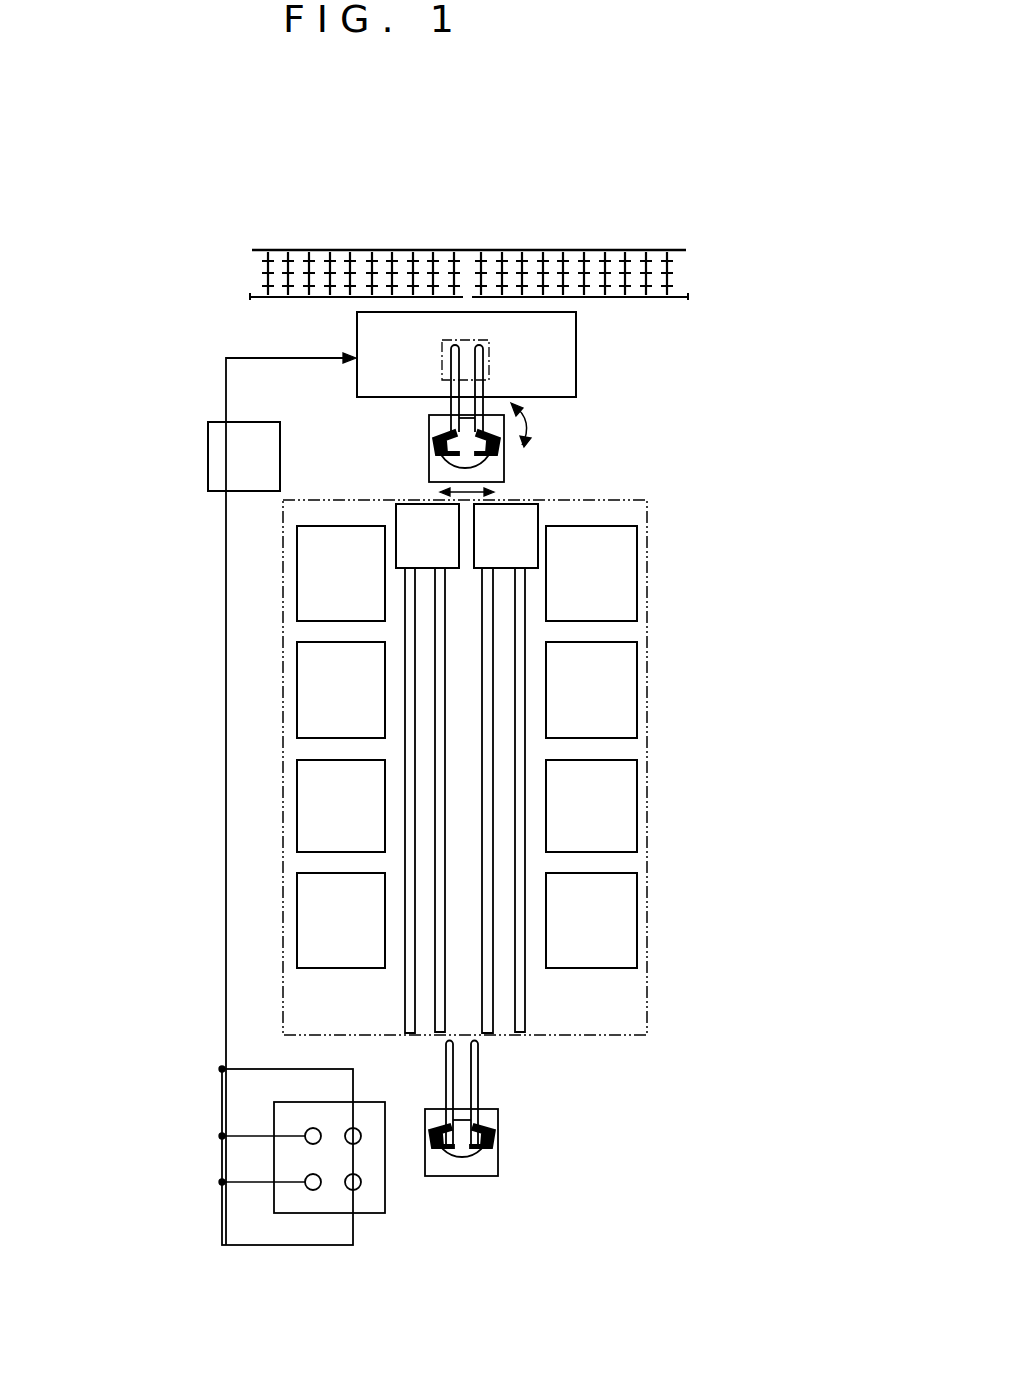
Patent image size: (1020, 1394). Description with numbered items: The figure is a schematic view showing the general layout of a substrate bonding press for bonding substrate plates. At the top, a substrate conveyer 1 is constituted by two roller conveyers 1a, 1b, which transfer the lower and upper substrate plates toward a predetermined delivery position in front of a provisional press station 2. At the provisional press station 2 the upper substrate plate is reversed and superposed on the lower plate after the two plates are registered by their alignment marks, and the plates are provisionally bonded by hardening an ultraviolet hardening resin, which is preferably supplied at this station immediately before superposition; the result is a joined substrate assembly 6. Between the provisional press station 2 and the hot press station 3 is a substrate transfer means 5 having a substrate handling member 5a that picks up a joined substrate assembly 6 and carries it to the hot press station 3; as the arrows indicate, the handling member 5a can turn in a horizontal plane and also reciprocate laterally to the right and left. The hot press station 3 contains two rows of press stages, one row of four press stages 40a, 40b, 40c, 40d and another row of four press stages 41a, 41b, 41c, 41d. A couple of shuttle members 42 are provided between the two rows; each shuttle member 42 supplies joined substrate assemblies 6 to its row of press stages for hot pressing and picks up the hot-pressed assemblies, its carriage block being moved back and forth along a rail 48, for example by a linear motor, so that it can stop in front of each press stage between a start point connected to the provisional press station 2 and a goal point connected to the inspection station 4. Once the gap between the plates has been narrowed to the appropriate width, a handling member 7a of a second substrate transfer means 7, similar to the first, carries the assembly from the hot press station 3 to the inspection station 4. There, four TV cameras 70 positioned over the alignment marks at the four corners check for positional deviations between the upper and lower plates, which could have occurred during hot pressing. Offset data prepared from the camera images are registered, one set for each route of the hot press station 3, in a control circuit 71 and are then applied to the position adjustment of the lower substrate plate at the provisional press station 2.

The substrate conveyer 1 is at (462, 228).
The roller conveyer 1a is at (280, 249).
The roller conveyer 1b is at (638, 249).
The provisional press station 2 is at (577, 358).
The hot press station 3 is at (648, 752).
The inspection station 4 is at (272, 1203).
The substrate transfer means 5 is at (505, 452).
The substrate handling member 5a is at (445, 434).
The joined substrate assembly 6 is at (442, 346).
The substrate transfer means 7 is at (498, 1163).
The handling member 7a is at (478, 1062).
The press stage 40a is at (341, 573).
The press stage 40b is at (341, 690).
The press stage 40c is at (341, 806).
The press stage 40d is at (341, 920).
The press stage 41a is at (591, 573).
The press stage 41b is at (591, 690).
The press stage 41c is at (591, 806).
The press stage 41d is at (591, 920).
The shuttle member 42 is at (396, 525).
The rail 48 is at (435, 1017).
The TV camera 70 is at (350, 1134).
The control circuit 71 is at (215, 456).